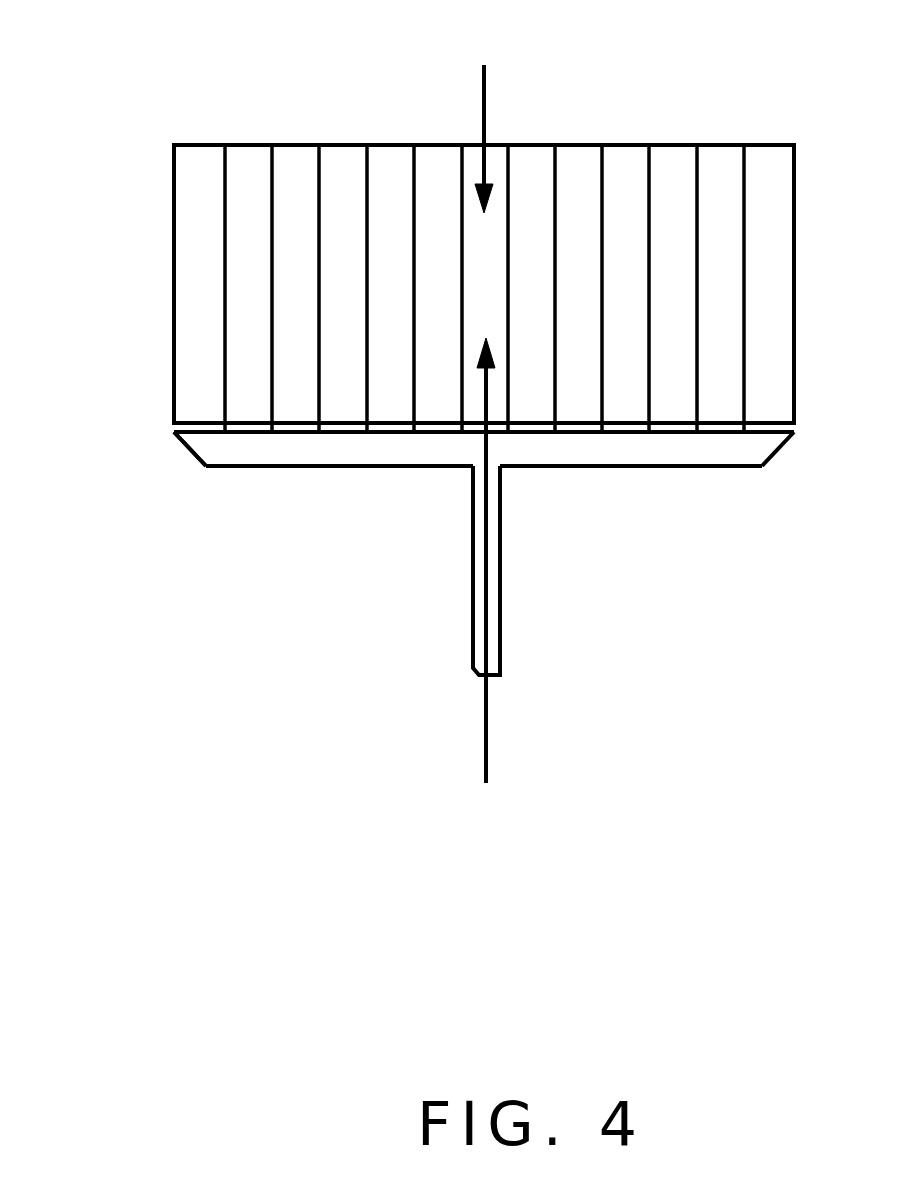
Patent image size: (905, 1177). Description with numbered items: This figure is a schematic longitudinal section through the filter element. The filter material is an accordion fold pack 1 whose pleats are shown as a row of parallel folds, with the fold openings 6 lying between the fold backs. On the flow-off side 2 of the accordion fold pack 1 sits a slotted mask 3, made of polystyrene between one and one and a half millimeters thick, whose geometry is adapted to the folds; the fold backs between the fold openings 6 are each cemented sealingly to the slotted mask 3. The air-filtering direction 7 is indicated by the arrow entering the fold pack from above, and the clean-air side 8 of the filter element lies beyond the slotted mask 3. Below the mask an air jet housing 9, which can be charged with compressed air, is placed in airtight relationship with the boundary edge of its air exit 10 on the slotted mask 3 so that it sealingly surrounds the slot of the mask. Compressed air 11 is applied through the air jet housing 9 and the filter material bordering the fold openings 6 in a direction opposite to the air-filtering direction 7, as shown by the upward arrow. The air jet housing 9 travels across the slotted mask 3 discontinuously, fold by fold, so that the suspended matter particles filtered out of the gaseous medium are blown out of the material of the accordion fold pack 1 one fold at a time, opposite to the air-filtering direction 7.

The accordion fold pack 1 is at (185, 258).
The flow-off side 2 is at (322, 527).
The slotted mask 3 is at (187, 450).
The fold openings 6 is at (404, 282).
The air-filtering direction 7 is at (485, 85).
The clean-air side 8 is at (552, 677).
The air jet housing 9 is at (410, 453).
The air exit 10 is at (585, 430).
The compressed air 11 is at (487, 765).